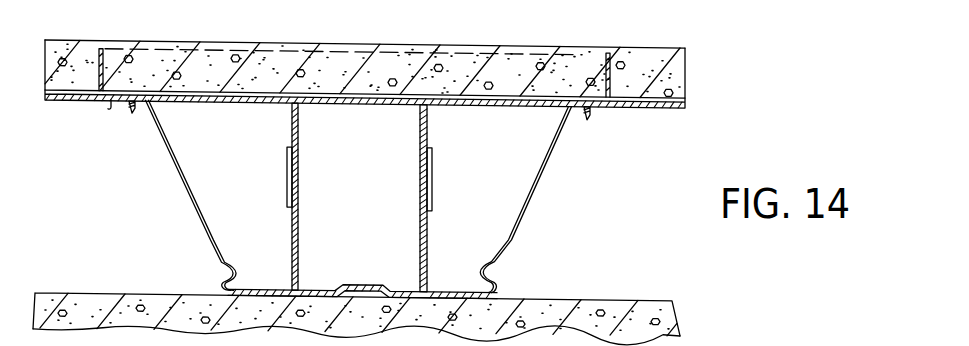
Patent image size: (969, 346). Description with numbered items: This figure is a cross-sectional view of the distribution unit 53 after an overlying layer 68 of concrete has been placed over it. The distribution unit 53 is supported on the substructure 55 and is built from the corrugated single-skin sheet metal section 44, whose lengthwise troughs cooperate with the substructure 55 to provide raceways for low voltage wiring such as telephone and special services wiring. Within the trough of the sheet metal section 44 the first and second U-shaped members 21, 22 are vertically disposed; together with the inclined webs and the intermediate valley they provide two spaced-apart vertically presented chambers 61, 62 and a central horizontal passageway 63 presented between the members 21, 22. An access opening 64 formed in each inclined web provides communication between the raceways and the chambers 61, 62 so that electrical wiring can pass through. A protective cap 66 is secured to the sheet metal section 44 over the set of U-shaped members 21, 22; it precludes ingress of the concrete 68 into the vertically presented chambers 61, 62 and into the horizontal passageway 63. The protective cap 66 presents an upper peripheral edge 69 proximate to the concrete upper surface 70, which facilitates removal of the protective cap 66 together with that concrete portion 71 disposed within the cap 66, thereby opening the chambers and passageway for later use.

The first U-shaped member 21 is at (419, 249).
The second U-shaped member 22 is at (299, 249).
The corrugated single-skin sheet metal section 44 is at (633, 108).
The distribution unit 53 is at (113, 104).
The substructure 55 is at (666, 316).
The vertically presented chamber 61 is at (494, 148).
The vertically presented chamber 62 is at (240, 148).
The central horizontal passageway 63 is at (373, 148).
The access opening 64 is at (183, 178).
The protective cap 66 is at (612, 65).
The layer of concrete 68 is at (660, 73).
The upper peripheral edge 69 is at (565, 52).
The concrete upper surface 70 is at (450, 45).
The concrete portion 71 is at (488, 63).